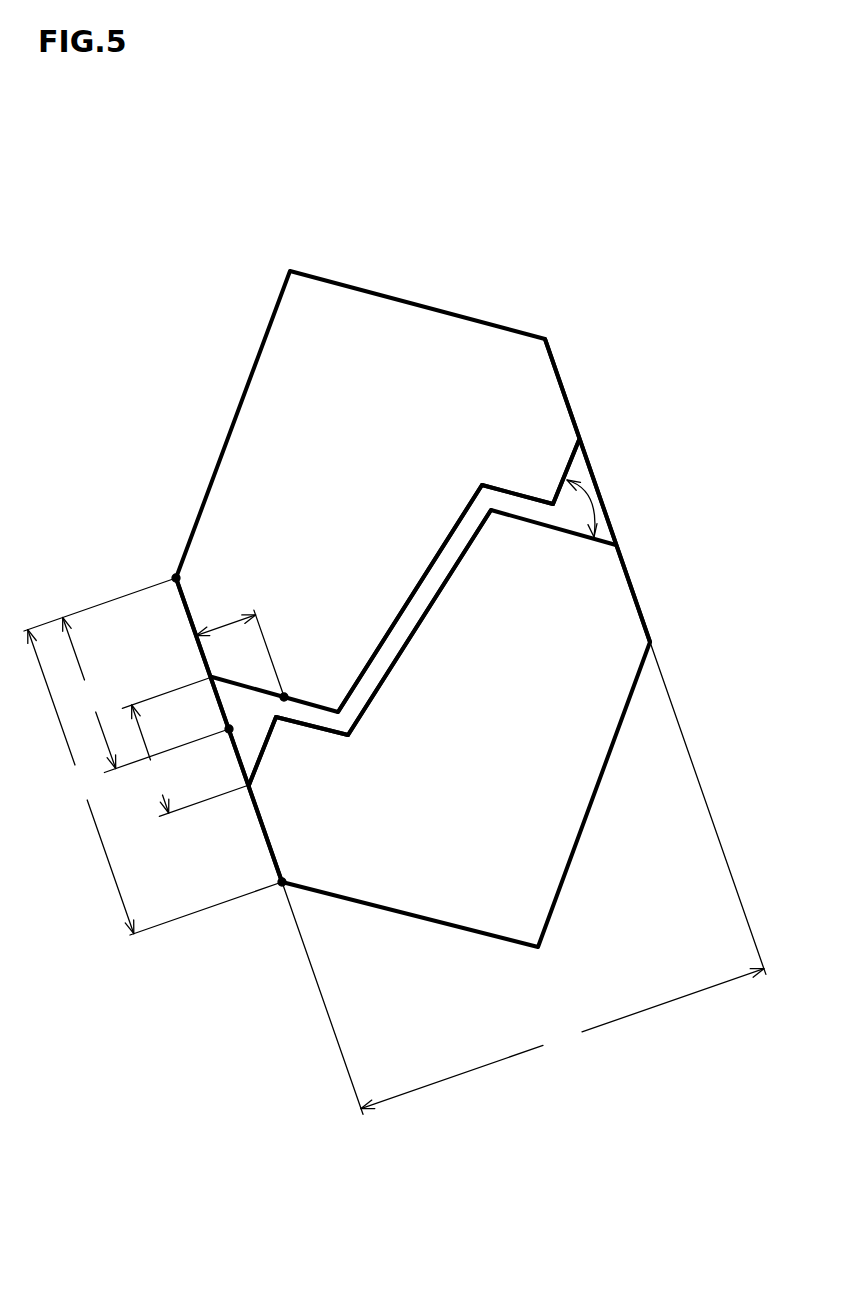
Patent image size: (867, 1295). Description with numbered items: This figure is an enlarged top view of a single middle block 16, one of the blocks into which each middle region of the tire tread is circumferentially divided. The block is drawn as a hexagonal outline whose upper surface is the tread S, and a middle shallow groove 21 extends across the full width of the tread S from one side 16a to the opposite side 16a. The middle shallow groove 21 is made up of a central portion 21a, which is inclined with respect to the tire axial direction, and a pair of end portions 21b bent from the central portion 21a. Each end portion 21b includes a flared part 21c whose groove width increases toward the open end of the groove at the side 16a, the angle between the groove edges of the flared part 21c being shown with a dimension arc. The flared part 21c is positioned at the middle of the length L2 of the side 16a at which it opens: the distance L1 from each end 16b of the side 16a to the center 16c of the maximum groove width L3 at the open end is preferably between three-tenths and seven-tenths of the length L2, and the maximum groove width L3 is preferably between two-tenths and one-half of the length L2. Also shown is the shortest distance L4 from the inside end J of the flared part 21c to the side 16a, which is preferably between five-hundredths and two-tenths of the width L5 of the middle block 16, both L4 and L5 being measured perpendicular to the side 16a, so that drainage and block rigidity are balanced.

The middle block 16 is at (350, 345).
The side of the tread of the middle block 16a is at (633, 585).
The end of the side 16b is at (176, 578).
The center of the maximum groove width 16c is at (229, 729).
The middle shallow groove 21 is at (443, 557).
The central portion 21a is at (412, 610).
The end portion 21b is at (512, 505).
The flared part 21c is at (580, 467).
The inside end of the flared part J is at (284, 697).
The distance of the center from each end of the side L1 is at (89, 693).
The length of the side L2 is at (153, 756).
The maximum groove width at the open end L3 is at (176, 746).
The shortest distance from the inside end to the side L4 is at (225, 620).
The width of the middle block L5 is at (524, 878).
The tread S is at (520, 702).